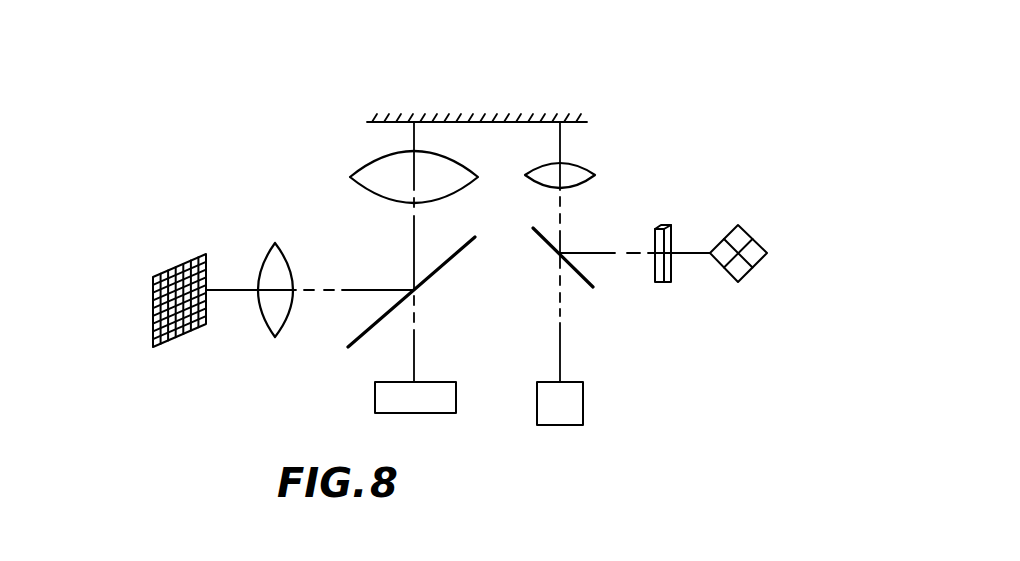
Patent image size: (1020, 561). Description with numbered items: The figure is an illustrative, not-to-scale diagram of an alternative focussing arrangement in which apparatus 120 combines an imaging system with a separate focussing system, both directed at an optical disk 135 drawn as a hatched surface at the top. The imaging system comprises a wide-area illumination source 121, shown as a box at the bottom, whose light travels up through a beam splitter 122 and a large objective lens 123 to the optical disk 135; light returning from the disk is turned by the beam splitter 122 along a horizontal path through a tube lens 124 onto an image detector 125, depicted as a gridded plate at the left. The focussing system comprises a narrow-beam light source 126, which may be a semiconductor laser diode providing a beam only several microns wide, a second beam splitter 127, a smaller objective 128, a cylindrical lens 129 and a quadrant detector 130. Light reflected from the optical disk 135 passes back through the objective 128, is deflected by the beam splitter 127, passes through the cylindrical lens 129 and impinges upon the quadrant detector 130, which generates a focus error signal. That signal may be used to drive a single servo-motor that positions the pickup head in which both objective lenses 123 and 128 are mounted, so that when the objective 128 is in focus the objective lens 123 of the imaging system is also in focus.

The apparatus 120 is at (718, 118).
The wide-area illumination source 121 is at (445, 382).
The beam splitter 122 is at (433, 275).
The objective lens 123 is at (372, 193).
The tube lens 124 is at (268, 322).
The image detector 125 is at (207, 265).
The narrow-beam light source 126 is at (584, 398).
The beam splitter 127 is at (551, 243).
The objective 128 is at (575, 168).
The cylindrical lens 129 is at (672, 275).
The quadrant detector 130 is at (758, 240).
The optical disk 135 is at (512, 122).